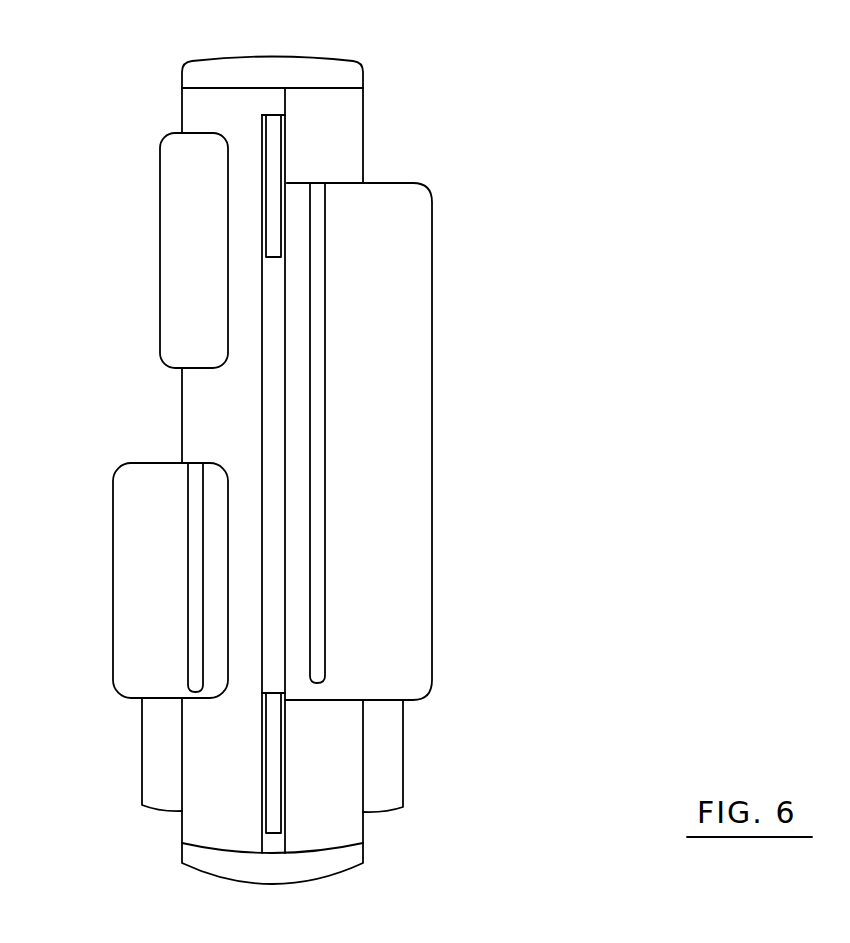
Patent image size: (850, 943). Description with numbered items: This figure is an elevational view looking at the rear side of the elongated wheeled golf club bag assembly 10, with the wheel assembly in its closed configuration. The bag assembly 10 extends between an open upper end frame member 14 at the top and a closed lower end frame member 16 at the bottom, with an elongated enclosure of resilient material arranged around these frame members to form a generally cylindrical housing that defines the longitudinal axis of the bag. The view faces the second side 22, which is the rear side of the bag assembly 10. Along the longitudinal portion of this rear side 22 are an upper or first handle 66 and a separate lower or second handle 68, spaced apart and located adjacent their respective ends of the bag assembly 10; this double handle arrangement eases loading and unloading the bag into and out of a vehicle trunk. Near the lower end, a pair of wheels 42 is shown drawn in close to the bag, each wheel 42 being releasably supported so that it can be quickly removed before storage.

The elongated wheeled golf club bag assembly 10 is at (540, 452).
The open upper end frame member 14 is at (328, 75).
The closed lower end frame member 16 is at (308, 872).
The second side 22 is at (340, 143).
The wheel 42 is at (162, 753).
The upper or first handle 66 is at (273, 140).
The lower or second handle 68 is at (273, 767).